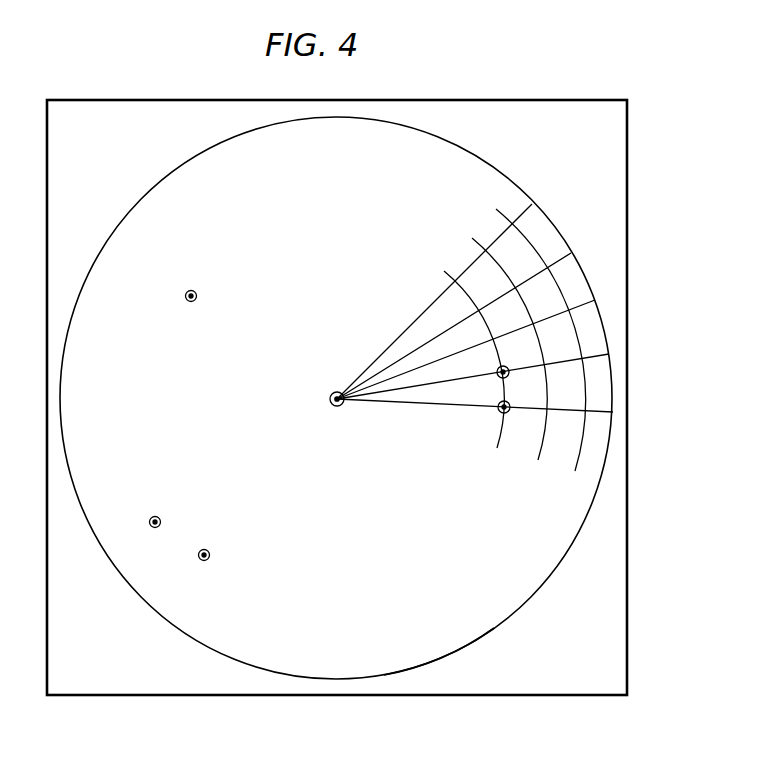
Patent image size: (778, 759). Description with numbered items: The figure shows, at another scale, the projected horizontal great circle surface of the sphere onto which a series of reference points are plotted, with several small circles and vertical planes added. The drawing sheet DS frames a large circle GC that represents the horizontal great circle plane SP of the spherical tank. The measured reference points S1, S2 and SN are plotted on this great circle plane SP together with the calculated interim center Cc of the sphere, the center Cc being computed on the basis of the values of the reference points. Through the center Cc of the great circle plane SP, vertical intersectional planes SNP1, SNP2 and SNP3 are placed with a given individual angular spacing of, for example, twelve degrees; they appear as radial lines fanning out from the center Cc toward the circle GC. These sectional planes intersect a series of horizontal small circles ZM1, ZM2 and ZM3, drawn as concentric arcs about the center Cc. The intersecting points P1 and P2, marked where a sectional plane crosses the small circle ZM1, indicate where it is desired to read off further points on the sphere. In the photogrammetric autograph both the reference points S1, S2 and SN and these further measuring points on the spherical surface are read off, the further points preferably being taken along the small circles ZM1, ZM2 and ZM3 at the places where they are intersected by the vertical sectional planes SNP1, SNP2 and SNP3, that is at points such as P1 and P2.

The display screen DS is at (605, 604).
The great circle GC is at (485, 637).
The horizontal great circle plane SP is at (437, 646).
The interim center Cc is at (333, 392).
The vertical intersectional plane SNP1 is at (533, 199).
The vertical intersectional plane SNP2 is at (571, 253).
The vertical intersectional plane SNP3 is at (593, 300).
The intersecting point P1 is at (500, 413).
The intersecting point P2 is at (500, 378).
The small circle ZM1 is at (498, 438).
The small circle ZM2 is at (541, 442).
The small circle ZM3 is at (583, 448).
The reference point SN is at (209, 297).
The reference point S1 is at (173, 522).
The reference point S2 is at (221, 556).